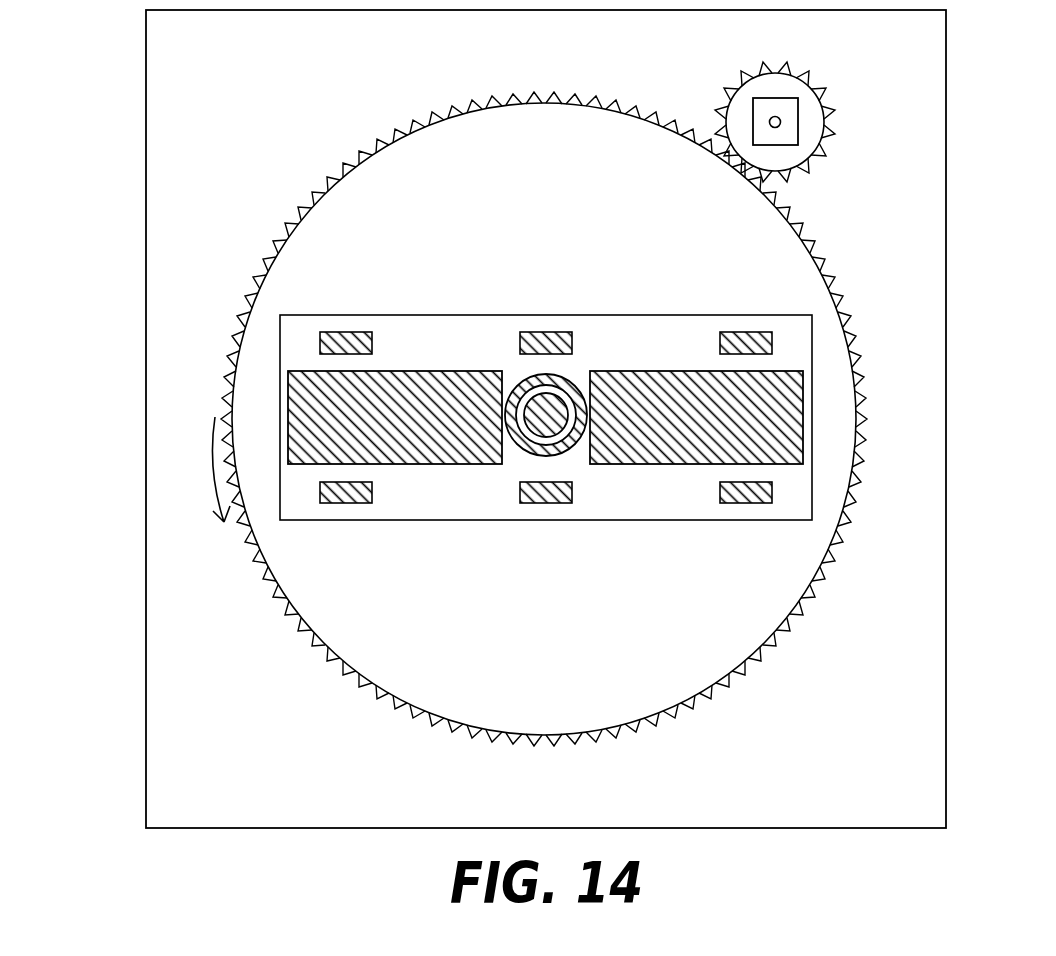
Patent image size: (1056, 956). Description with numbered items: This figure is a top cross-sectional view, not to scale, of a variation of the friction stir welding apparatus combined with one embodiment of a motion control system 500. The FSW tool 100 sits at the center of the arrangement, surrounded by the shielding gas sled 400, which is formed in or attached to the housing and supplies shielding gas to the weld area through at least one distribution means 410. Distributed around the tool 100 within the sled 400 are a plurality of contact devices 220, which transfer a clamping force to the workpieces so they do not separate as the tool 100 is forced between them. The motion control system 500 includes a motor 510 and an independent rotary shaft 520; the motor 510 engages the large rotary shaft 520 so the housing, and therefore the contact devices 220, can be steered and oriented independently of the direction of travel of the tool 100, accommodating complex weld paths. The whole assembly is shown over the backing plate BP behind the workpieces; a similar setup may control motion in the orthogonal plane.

The FSW tool 100 is at (584, 350).
The contact devices 220 is at (328, 332).
The shielding gas sled 400 is at (280, 382).
The distribution means 410 is at (413, 372).
The motion control system 500 is at (617, 400).
The motor 510 is at (797, 105).
The independent rotary shaft 520 is at (828, 257).
The backing plate BP is at (946, 659).